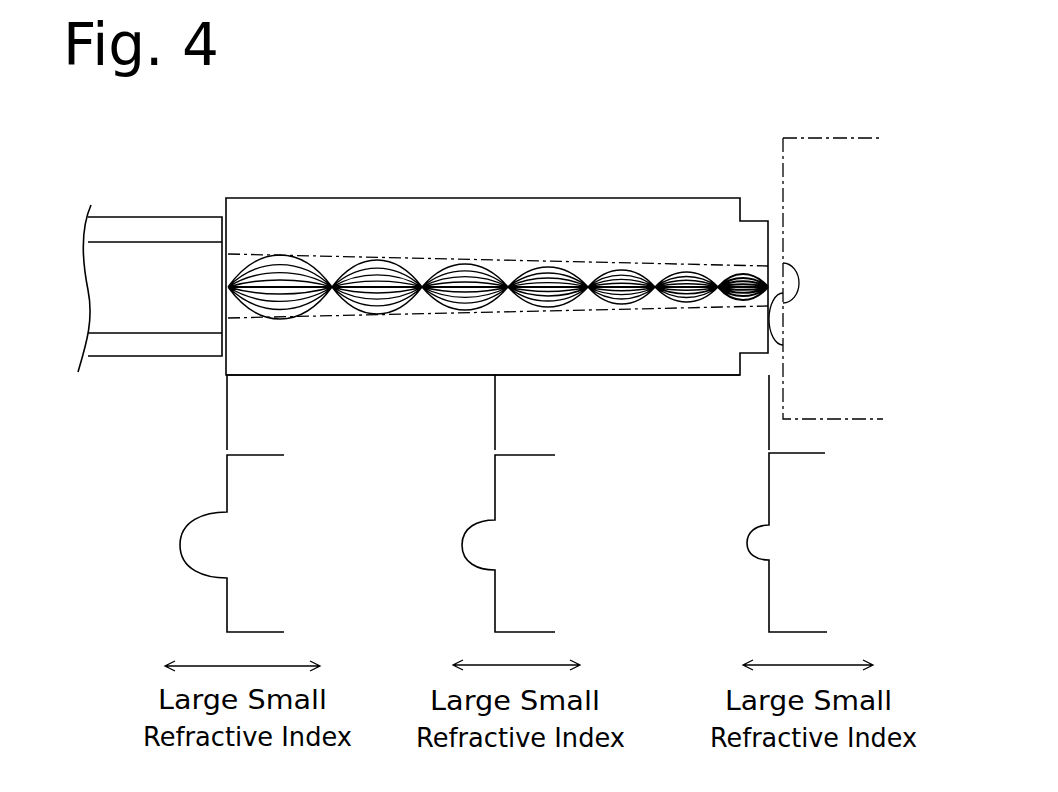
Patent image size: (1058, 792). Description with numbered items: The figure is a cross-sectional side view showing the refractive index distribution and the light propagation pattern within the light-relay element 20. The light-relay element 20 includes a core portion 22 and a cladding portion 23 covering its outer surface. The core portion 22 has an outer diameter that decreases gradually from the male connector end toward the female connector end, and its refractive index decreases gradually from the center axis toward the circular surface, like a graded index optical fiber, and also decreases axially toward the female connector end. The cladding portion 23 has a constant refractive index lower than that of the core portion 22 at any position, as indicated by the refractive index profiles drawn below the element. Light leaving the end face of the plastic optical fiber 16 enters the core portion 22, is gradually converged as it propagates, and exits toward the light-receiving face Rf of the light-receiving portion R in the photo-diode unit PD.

The plastic optical fiber 16 is at (150, 217).
The light-relay element 20 is at (403, 168).
The core portion 22 is at (587, 277).
The cladding portion 23 is at (646, 365).
The photo-diode unit PD is at (812, 130).
The light-receiving portion R is at (800, 272).
The light-receiving face Rf is at (783, 345).